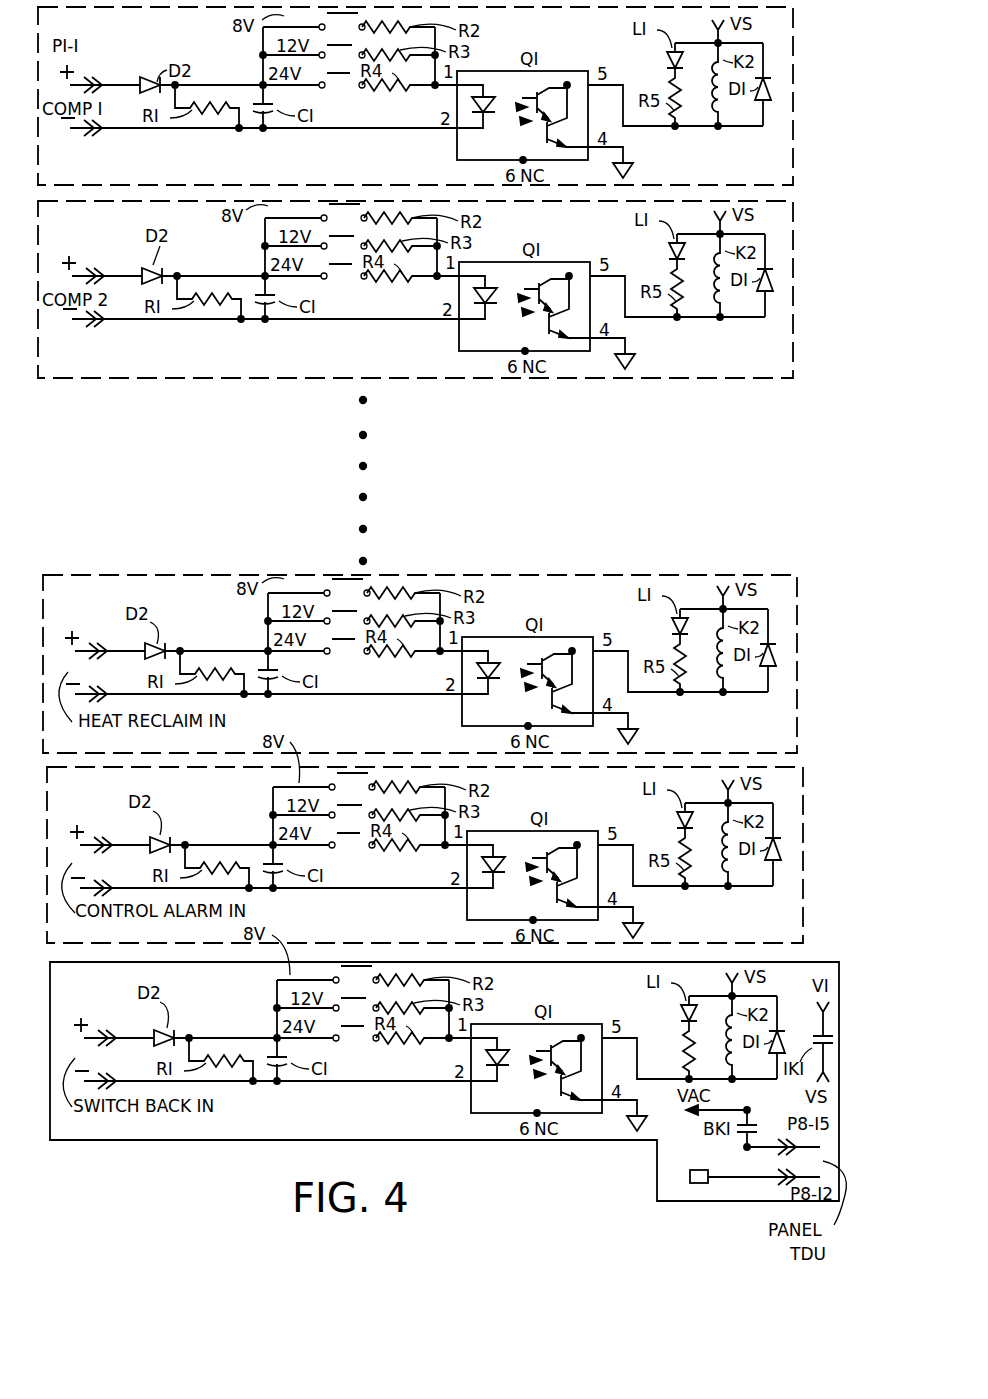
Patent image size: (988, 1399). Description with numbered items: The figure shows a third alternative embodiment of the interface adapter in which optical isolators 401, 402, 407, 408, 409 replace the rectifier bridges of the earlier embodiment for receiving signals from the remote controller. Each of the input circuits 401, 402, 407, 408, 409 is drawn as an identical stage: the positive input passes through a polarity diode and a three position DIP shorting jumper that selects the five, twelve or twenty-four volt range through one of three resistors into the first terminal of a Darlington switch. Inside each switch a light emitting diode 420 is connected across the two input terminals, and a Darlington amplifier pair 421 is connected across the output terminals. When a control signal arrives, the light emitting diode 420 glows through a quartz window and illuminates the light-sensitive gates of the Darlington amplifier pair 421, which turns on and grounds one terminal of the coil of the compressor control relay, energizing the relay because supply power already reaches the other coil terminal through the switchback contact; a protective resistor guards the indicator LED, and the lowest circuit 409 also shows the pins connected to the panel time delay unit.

The optical isolator 401 is at (252, 40).
The optical isolator 402 is at (258, 243).
The optical isolator 407 is at (258, 605).
The optical isolator 408 is at (258, 790).
The optical isolator 409 is at (264, 1007).
The light emitting diode 420 is at (473, 320).
The Darlington amplifier pair 421 is at (547, 333).